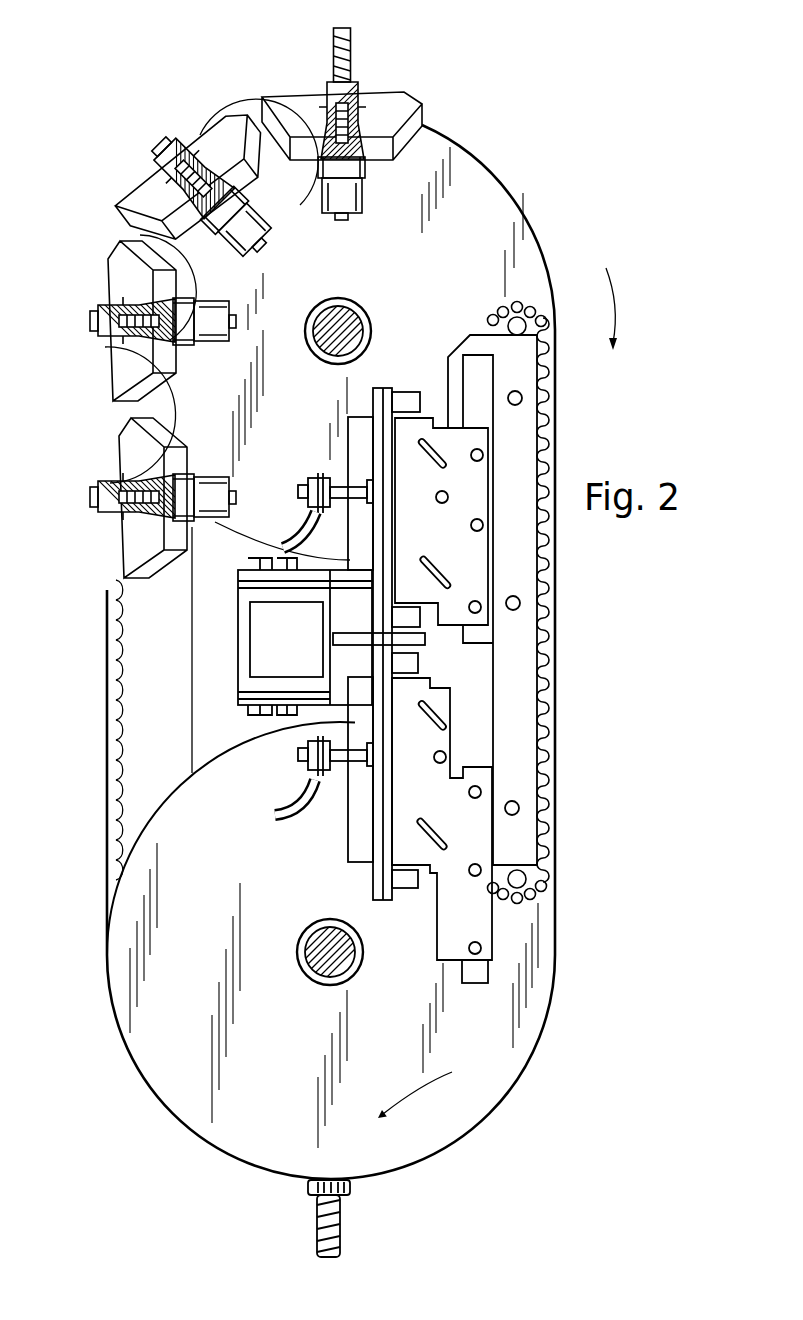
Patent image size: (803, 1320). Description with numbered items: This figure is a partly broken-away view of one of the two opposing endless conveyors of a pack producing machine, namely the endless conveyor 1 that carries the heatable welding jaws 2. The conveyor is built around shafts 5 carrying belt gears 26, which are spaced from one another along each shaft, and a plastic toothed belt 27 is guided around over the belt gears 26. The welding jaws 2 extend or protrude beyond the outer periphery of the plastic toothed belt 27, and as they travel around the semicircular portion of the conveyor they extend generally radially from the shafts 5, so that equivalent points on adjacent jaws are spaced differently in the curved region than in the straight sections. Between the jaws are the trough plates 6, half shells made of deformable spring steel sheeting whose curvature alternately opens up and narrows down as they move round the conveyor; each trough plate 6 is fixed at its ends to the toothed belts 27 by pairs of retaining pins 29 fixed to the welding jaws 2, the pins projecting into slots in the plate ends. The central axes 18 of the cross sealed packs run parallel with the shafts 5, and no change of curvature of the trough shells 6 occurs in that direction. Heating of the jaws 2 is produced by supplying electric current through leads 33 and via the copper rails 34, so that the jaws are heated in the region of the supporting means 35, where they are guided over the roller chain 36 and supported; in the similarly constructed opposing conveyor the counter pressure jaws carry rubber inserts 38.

The endless conveyor 1 is at (529, 198).
The heatable welding jaws 2 is at (335, 85).
The shafts 5 is at (322, 339).
The trough plates 6 is at (293, 187).
The central axes 18 is at (413, 1100).
The belt gears 26 is at (522, 1006).
The plastic toothed belt 27 is at (110, 742).
The retaining pins 29 is at (375, 92).
The leads 33 is at (293, 530).
The copper rails 34 is at (377, 882).
The supporting means 35 is at (512, 728).
The roller chain 36 is at (532, 893).
The rubber inserts 38 is at (92, 318).